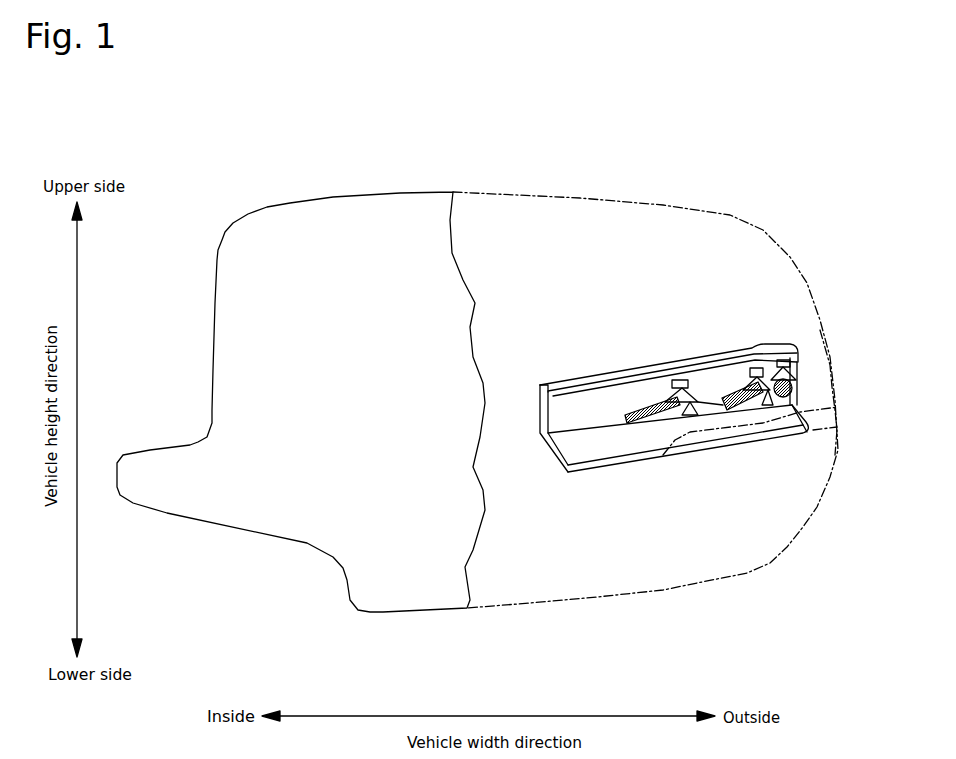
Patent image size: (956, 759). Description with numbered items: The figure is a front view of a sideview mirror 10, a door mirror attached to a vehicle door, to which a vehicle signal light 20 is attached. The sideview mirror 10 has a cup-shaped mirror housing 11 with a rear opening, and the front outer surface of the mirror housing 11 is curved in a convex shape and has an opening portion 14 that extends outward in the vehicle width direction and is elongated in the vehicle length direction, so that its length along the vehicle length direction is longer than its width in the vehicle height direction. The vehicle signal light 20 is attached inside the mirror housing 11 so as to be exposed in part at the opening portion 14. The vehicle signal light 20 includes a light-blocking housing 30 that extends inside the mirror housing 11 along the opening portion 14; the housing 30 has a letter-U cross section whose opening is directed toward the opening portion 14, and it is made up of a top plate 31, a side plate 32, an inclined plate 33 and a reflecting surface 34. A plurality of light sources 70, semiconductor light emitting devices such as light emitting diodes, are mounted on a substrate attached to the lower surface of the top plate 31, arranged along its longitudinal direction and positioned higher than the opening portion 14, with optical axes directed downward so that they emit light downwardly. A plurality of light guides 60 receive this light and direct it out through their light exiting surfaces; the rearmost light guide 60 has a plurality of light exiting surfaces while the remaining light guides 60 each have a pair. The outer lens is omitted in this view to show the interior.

The sideview mirror 10 is at (229, 157).
The mirror housing 11 is at (423, 208).
The opening portion 14 is at (833, 395).
The vehicle signal light 20 is at (687, 338).
The housing 30 is at (645, 374).
The top plate 31 is at (557, 387).
The side plate 32 is at (540, 387).
The inclined plate 33 is at (542, 447).
The reflecting surface 34 is at (577, 450).
The light guide 60 is at (650, 410).
The light source 70 is at (678, 380).